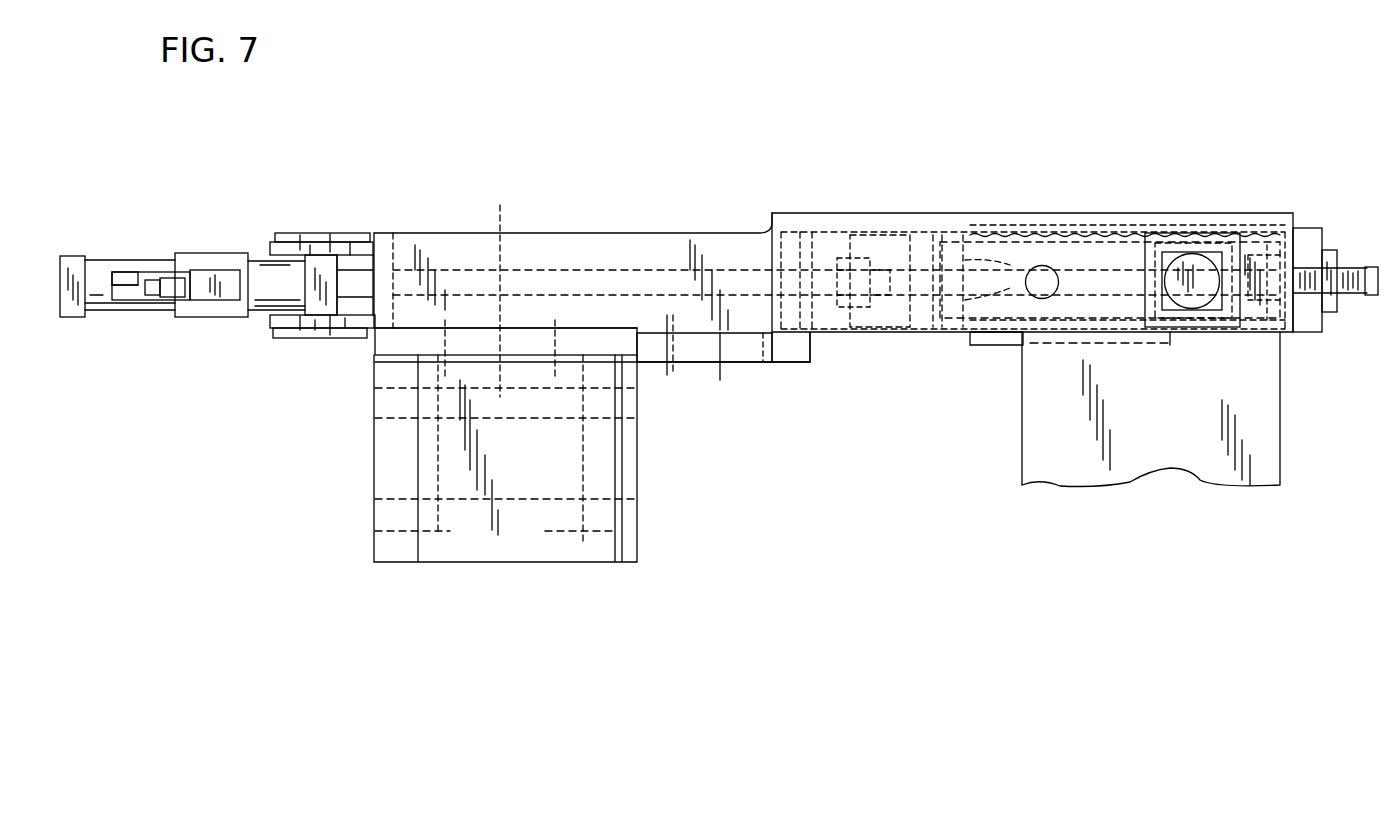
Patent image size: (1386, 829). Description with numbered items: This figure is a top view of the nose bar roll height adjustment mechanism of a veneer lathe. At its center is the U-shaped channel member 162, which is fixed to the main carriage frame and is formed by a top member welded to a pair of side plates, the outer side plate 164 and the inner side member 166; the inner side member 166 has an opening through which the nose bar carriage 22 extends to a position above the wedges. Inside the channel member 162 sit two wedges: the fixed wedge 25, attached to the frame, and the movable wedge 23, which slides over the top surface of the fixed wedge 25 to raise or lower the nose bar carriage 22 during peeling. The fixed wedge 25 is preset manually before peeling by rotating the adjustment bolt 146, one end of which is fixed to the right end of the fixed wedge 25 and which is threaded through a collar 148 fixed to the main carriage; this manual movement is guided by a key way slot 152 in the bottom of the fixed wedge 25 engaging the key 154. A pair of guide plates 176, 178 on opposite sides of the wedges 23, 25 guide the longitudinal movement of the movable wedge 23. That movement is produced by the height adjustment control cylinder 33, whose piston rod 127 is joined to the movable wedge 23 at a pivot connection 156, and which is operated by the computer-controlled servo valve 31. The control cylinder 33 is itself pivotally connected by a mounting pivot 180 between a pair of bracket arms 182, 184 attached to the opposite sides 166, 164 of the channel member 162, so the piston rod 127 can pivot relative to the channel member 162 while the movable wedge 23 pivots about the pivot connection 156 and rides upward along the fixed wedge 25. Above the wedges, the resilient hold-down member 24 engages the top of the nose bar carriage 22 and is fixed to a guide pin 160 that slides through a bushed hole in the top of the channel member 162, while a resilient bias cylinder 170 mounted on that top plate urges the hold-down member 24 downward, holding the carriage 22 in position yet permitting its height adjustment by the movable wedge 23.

The nose bar carriage 22 is at (1283, 445).
The movable wedge member 23 is at (875, 256).
The resilient hold-down member 24 is at (1005, 250).
The fixed wedge member 25 is at (1295, 320).
The servo valve 31 is at (153, 268).
The control cylinder 33 is at (263, 268).
The piston rod 127 is at (558, 272).
The adjustment bolt 146 is at (1351, 267).
The collar 148 is at (1330, 312).
The key way slot 152 is at (962, 300).
The key 154 is at (1097, 270).
The pivot connection 156 is at (840, 255).
The guide pin 160 is at (1045, 298).
The U-shaped channel member 162 is at (650, 222).
The side plate 164 is at (1278, 212).
The inner side member 166 is at (1238, 333).
The resilient bias cylinder 170 is at (1204, 298).
The guide plate 176 is at (1125, 345).
The guide plate 178 is at (982, 230).
The mounting pivot 180 is at (325, 338).
The bracket arm 182 is at (272, 320).
The bracket arm 184 is at (360, 247).